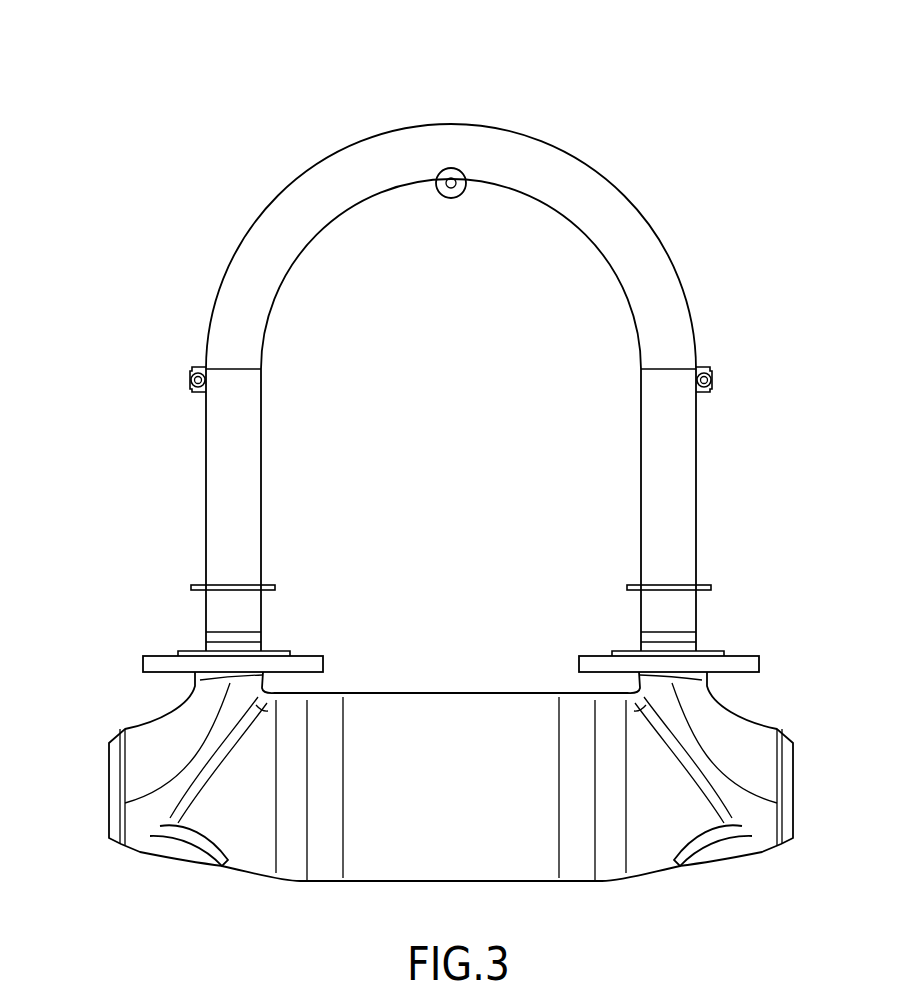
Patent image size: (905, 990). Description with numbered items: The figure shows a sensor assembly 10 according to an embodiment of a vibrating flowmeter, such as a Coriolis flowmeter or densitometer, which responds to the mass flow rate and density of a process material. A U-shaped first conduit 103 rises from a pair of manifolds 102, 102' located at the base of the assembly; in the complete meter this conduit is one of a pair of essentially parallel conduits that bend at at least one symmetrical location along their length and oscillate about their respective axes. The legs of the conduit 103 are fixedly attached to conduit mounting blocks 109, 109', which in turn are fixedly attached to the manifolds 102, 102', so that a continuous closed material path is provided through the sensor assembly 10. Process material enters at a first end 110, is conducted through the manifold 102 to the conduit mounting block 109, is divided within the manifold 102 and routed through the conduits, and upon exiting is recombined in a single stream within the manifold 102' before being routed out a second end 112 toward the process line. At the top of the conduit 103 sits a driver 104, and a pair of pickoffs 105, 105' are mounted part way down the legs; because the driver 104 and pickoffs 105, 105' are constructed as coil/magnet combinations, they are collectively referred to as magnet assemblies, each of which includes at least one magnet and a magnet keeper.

The sensor assembly 10 is at (670, 70).
The manifold 102 is at (167, 855).
The manifold 102' is at (728, 856).
The first conduit 103 is at (598, 172).
The driver 104 is at (462, 196).
The pickoff 105 is at (164, 361).
The pickoff 105' is at (743, 365).
The conduit mounting block 109 is at (240, 631).
The conduit mounting block 109' is at (656, 629).
The first end 110 is at (82, 818).
The second end 112 is at (812, 808).